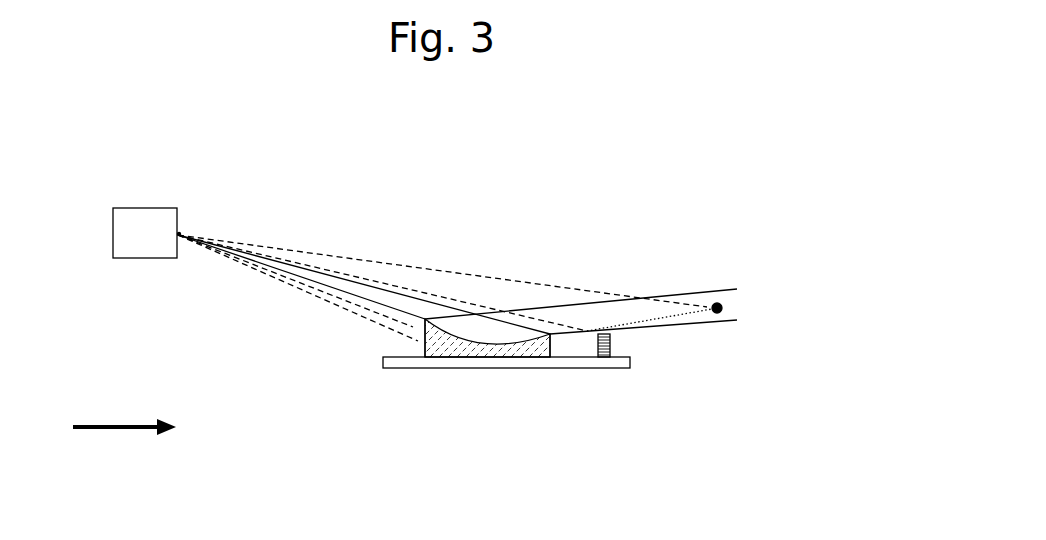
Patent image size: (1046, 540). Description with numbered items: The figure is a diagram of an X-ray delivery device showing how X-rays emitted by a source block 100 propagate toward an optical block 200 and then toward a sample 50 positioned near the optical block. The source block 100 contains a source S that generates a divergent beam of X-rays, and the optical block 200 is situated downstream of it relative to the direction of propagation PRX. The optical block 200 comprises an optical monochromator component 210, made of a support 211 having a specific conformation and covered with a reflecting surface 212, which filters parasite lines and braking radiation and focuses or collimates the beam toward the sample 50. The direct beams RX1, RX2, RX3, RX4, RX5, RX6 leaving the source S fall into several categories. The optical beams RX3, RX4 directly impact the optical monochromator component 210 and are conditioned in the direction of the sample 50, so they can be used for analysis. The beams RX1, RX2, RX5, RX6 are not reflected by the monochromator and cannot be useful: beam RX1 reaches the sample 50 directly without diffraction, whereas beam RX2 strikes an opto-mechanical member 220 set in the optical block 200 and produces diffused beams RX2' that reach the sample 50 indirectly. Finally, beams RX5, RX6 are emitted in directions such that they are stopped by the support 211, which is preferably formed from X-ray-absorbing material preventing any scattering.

The source block 100 is at (134, 183).
The optical block 200 is at (592, 226).
The optical monochromator component 210 is at (498, 360).
The support 211 is at (458, 343).
The reflecting surface 212 is at (528, 343).
The opto-mechanical member 220 is at (603, 350).
The sample 50 is at (716, 302).
The direct X-ray beam RX1 is at (238, 243).
The direct X-ray beam RX2 is at (364, 238).
The optical beam RX3 is at (353, 280).
The optical beam RX4 is at (280, 272).
The direct X-ray beam RX5 is at (317, 288).
The direct X-ray beam RX6 is at (358, 312).
The diffused beam RX2' is at (667, 351).
The direction of propagation PRX is at (124, 405).